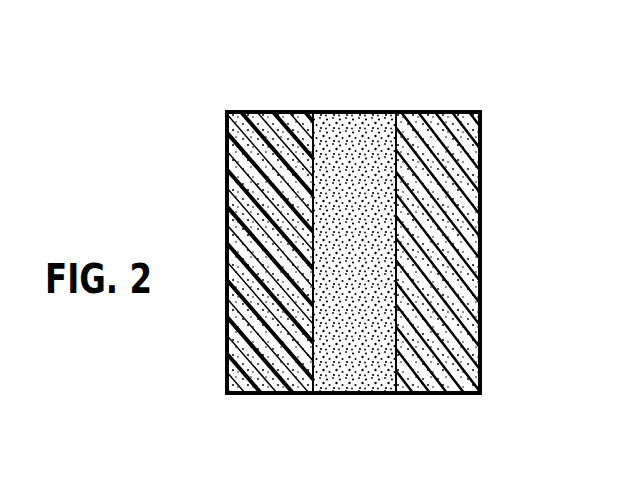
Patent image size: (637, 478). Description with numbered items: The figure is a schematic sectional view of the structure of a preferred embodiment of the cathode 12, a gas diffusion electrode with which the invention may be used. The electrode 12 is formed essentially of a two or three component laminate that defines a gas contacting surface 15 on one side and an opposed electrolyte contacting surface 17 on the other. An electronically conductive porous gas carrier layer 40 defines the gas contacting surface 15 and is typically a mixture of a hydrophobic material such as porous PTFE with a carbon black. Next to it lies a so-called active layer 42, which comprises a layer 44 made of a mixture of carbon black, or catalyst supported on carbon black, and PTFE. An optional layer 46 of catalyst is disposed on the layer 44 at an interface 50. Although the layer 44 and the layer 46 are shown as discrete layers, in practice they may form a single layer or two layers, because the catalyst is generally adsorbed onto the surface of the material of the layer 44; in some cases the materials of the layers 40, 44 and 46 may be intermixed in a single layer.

The cathode 12 is at (462, 90).
The gas contacting surface 15 is at (237, 175).
The electrolyte contacting surface 17 is at (475, 240).
The electronically conductive porous gas carrier layer 40 is at (237, 330).
The active layer 42 is at (310, 397).
The layer 44 is at (350, 112).
The layer of catalyst 46 is at (475, 352).
The interface 50 is at (417, 112).